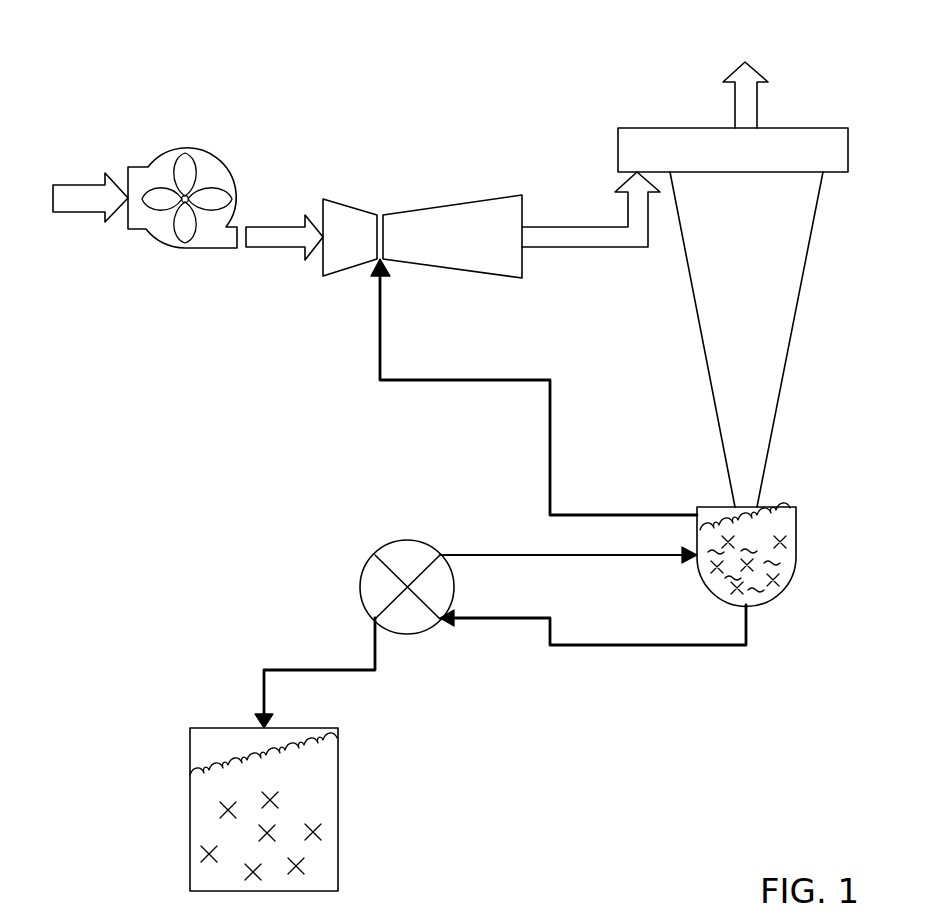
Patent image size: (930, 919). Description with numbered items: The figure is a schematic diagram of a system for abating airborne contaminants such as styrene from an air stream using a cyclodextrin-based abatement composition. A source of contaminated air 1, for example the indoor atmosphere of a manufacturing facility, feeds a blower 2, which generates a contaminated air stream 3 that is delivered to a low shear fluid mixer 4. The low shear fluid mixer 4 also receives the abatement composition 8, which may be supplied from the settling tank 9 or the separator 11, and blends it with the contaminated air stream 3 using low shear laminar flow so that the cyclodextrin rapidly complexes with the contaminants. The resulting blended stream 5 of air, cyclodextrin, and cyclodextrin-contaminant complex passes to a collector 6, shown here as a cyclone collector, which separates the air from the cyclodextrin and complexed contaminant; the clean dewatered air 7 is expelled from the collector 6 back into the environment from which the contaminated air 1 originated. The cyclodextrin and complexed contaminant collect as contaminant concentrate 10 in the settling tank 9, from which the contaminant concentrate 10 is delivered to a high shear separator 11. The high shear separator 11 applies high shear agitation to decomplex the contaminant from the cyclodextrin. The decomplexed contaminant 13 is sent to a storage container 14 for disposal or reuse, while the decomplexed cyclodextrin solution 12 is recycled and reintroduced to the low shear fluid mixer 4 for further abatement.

The contaminated air 1 is at (53, 186).
The blower 2 is at (148, 167).
The contaminated air stream 3 is at (276, 248).
The low shear fluid mixer 4 is at (323, 199).
The blended stream 5 is at (583, 248).
The collector 6 is at (618, 128).
The clean dewatered air 7 is at (745, 62).
The abatement composition 8 is at (380, 345).
The settling tank 9 is at (796, 527).
The contaminant concentrate 10 is at (628, 647).
The high shear separator 11 is at (375, 555).
The decomplexed cyclodextrin solution 12 is at (622, 558).
The decomplexed contaminant 13 is at (375, 645).
The storage container 14 is at (190, 728).